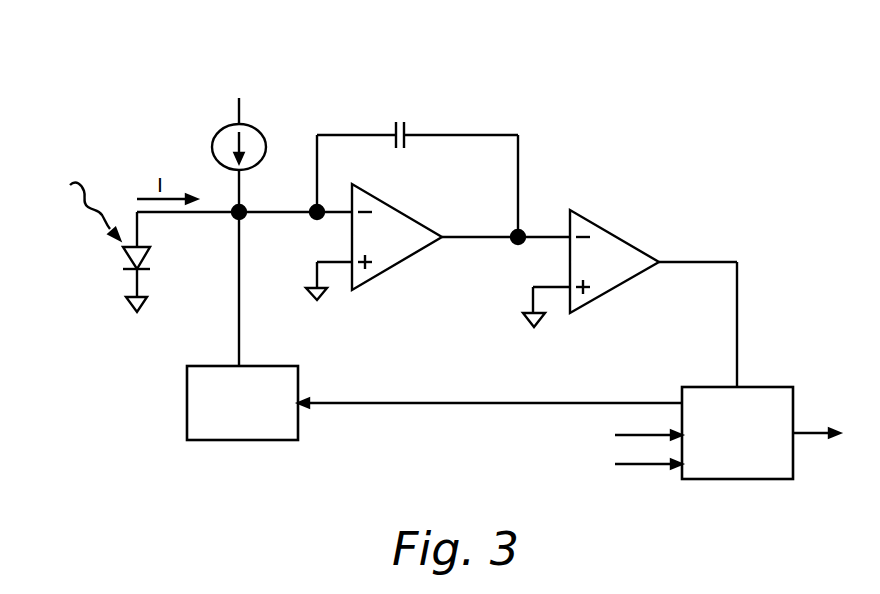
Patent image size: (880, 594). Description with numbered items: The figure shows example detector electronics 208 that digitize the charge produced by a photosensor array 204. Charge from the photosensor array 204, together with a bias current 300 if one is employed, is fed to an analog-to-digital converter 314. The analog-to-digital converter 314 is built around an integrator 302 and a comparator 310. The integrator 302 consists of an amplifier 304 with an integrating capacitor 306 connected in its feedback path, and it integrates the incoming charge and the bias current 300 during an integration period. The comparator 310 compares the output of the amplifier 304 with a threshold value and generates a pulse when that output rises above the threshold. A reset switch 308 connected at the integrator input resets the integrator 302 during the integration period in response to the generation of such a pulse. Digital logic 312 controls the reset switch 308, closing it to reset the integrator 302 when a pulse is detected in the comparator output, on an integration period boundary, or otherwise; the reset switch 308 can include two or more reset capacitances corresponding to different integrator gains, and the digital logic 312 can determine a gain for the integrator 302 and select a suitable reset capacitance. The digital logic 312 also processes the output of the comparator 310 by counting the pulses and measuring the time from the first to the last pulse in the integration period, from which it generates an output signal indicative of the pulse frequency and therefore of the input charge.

The photosensor array 204 is at (98, 285).
The electronics 208 is at (742, 115).
The bias current 300 is at (187, 135).
The integrator 302 is at (563, 150).
The amplifier 304 is at (392, 267).
The integrating capacitor 306 is at (401, 121).
The reset switch 308 is at (187, 403).
The comparator 310 is at (625, 238).
The digital logic 312 is at (767, 387).
The analog-to-digital converter 314 is at (333, 107).